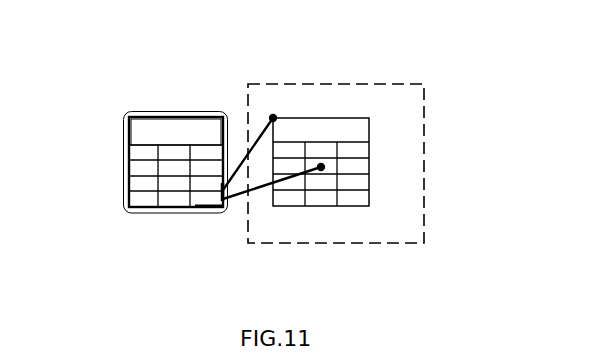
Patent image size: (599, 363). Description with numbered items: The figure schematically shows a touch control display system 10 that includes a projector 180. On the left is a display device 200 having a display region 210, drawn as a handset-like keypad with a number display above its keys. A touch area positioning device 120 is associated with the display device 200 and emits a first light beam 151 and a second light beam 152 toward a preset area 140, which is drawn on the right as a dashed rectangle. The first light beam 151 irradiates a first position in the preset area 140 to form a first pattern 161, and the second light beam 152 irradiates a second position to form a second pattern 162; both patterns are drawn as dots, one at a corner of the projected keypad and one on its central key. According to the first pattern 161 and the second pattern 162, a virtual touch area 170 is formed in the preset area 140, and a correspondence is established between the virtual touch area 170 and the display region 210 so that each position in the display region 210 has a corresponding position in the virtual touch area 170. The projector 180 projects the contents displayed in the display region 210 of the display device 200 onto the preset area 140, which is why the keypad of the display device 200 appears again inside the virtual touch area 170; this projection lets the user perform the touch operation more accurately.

The touch control display system 10 is at (93, 21).
The touch area positioning device 120 is at (170, 243).
The preset area 140 is at (377, 196).
The first light beam 151 is at (284, 239).
The second light beam 152 is at (287, 199).
The first pattern 161 is at (377, 105).
The second pattern 162 is at (309, 80).
The virtual touch area 170 is at (358, 213).
The projector 180 is at (176, 128).
The display device 200 is at (135, 203).
The display region 210 is at (134, 180).